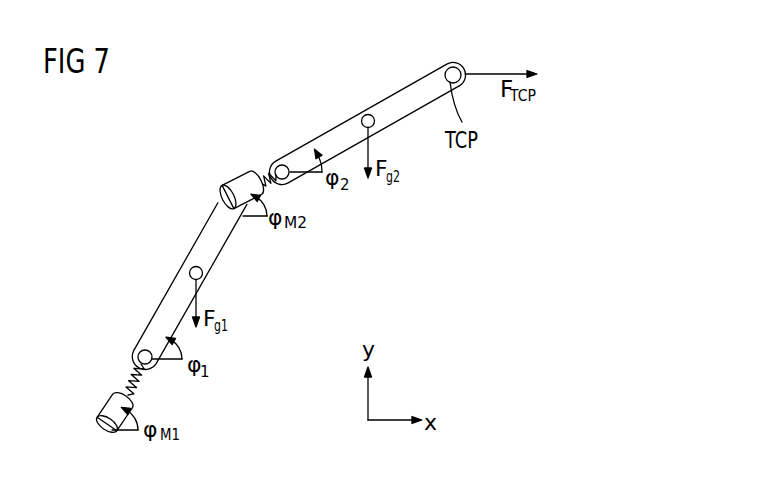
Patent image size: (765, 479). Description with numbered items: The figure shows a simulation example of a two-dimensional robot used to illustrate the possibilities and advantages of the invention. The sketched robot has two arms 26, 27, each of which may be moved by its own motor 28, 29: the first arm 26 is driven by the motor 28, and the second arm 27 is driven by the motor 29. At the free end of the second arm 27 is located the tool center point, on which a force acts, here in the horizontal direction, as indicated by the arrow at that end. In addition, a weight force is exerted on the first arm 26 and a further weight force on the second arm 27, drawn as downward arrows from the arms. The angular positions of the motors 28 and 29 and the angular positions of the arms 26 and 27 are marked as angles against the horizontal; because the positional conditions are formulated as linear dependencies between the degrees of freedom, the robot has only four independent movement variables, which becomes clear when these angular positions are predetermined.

The first arm 26 is at (175, 297).
The second arm 27 is at (334, 140).
The motor 28 is at (110, 408).
The motor 29 is at (243, 184).